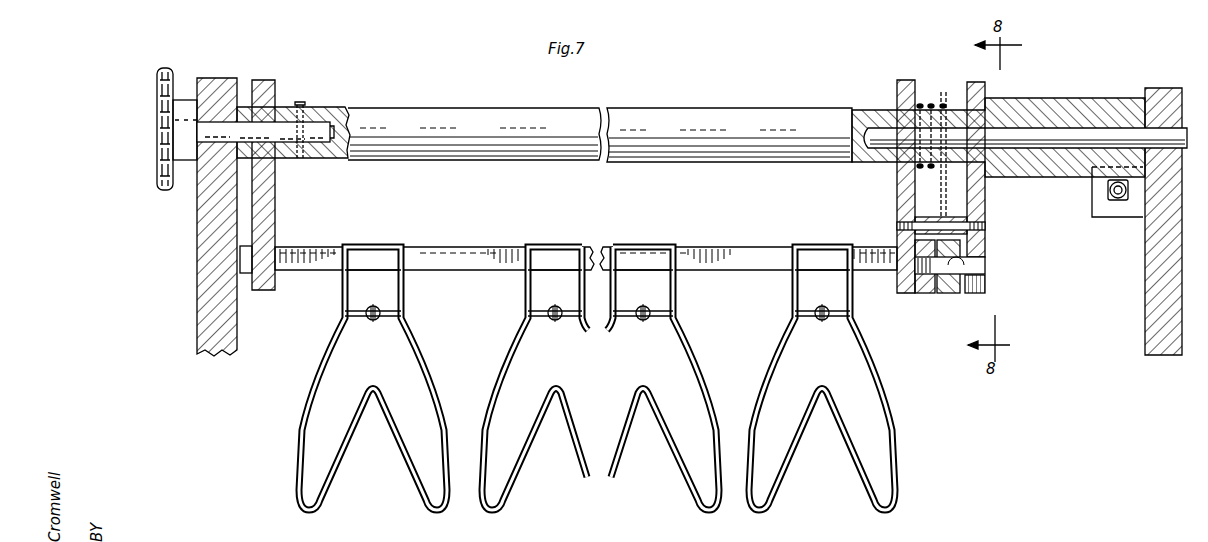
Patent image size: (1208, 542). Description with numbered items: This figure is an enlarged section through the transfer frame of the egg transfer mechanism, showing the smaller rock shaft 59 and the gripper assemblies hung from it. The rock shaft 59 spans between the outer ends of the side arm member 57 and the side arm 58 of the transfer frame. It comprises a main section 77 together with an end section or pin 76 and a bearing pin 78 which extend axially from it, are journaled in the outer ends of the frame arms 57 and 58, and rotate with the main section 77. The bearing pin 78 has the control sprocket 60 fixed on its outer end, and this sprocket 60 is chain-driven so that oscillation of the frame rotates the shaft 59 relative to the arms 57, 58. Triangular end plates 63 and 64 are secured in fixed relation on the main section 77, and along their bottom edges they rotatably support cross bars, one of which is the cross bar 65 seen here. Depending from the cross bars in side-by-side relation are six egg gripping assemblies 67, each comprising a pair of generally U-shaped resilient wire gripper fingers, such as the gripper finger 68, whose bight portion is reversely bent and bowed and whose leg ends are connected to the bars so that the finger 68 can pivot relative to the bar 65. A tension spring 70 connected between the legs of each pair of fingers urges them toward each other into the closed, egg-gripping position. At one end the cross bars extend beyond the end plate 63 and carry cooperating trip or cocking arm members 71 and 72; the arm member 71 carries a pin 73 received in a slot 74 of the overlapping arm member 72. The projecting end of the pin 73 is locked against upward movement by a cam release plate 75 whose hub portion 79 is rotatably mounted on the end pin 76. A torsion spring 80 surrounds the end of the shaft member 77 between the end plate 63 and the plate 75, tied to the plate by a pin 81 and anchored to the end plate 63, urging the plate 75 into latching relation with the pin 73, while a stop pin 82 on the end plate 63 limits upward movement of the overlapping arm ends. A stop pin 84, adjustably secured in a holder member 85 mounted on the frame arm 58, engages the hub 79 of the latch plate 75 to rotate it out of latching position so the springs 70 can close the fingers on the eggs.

The side arm member 57 is at (1146, 303).
The side arm 58 is at (197, 268).
The rock shaft 59 is at (685, 110).
The sprocket 60 is at (160, 88).
The end plate 63 is at (905, 175).
The end plate 64 is at (272, 212).
The cross bar 65 is at (459, 252).
The egg gripping assembly 67 is at (290, 433).
The gripper finger 68 is at (569, 378).
The tension spring 70 is at (373, 321).
The trip or cocking arm member 71 is at (928, 292).
The trip or cocking arm member 72 is at (948, 293).
The pin 73 is at (986, 267).
The slot 74 is at (967, 292).
The cam release plate 75 is at (986, 242).
The end section or pin 76 is at (1078, 134).
The main section 77 is at (520, 112).
The bearing pin 78 is at (270, 128).
The hub portion 79 is at (1045, 110).
The torsion spring 80 is at (943, 107).
The pin 81 is at (950, 222).
The stop pin 82 is at (920, 225).
The stop pin 84 is at (1117, 200).
The holder member 85 is at (1092, 208).